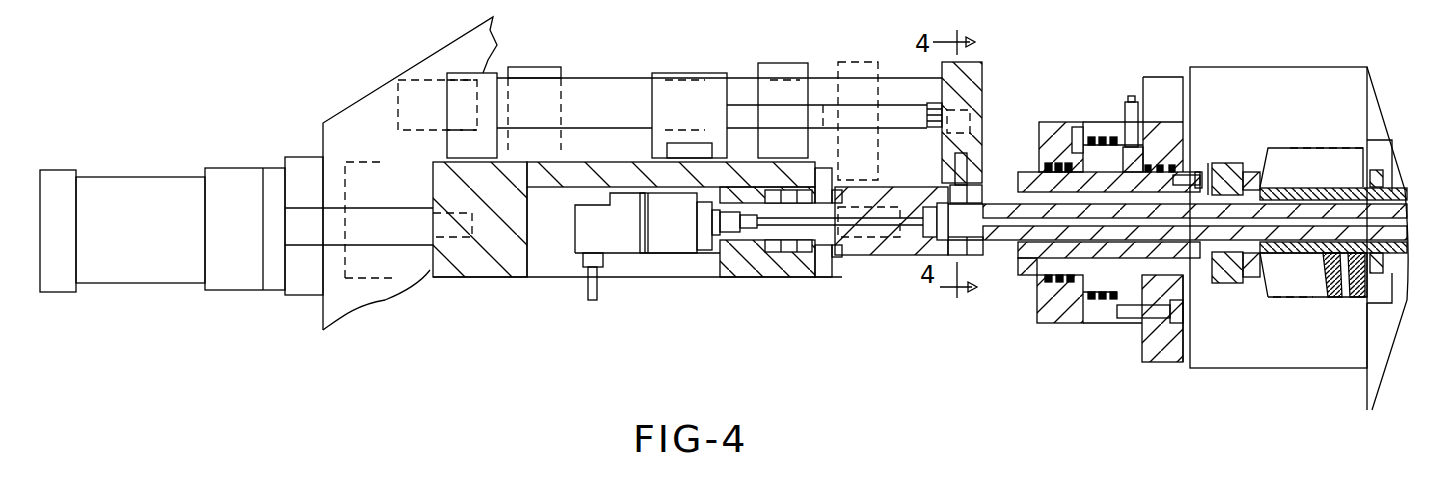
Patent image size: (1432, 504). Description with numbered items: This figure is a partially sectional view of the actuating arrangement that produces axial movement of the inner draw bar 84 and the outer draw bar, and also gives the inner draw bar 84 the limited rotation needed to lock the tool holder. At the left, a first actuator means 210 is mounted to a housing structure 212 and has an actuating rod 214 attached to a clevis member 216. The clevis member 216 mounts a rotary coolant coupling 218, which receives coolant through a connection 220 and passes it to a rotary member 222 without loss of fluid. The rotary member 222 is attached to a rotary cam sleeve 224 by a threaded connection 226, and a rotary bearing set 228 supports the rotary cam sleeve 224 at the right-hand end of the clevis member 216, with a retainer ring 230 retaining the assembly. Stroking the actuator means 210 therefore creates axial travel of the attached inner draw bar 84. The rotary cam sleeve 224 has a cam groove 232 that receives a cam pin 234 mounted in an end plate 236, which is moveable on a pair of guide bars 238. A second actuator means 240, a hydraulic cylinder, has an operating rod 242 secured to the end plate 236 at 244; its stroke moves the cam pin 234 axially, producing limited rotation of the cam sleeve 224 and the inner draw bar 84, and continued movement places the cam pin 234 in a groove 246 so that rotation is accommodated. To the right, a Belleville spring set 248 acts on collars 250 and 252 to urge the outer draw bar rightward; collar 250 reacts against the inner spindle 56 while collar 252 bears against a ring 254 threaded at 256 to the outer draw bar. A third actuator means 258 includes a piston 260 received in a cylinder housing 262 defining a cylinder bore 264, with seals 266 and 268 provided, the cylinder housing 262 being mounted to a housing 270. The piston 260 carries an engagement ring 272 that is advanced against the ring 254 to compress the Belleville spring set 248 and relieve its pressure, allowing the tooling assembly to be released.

The first actuator means 210 is at (125, 141).
The housing structure 212 is at (347, 108).
The actuating rod 214 is at (413, 183).
The clevis member 216 is at (481, 278).
The rotary coolant coupling 218 is at (668, 250).
The connection 220 is at (588, 283).
The rotary member 222 is at (688, 250).
The rotary cam sleeve 224 is at (912, 277).
The threaded connection 226 is at (728, 212).
The rotary bearing set 228 is at (787, 260).
The retainer ring 230 is at (830, 272).
The cam groove 232 is at (888, 202).
The cam pin 234 is at (965, 197).
The end plate 236 is at (983, 80).
The guide bars 238 is at (737, 77).
The actuator means 240 is at (637, 52).
The operating rod 242 is at (857, 115).
The securing point 244 is at (933, 102).
The groove 246 is at (973, 255).
The Belleville spring set 248 is at (1265, 293).
The collar 250 is at (1373, 172).
The collar 252 is at (1263, 187).
The ring 254 is at (1230, 163).
The threaded connection 256 is at (1223, 193).
The actuator means 258 is at (1040, 122).
The piston 260 is at (1122, 183).
The cylinder housing 262 is at (1097, 128).
The cylinder bore 264 is at (1123, 147).
The seal 266 is at (1053, 282).
The seal 268 is at (1107, 298).
The housing 270 is at (1320, 40).
The engagement ring 272 is at (1220, 294).
The inner draw bar 84 is at (1317, 210).
The inner spindle 56 is at (1395, 187).